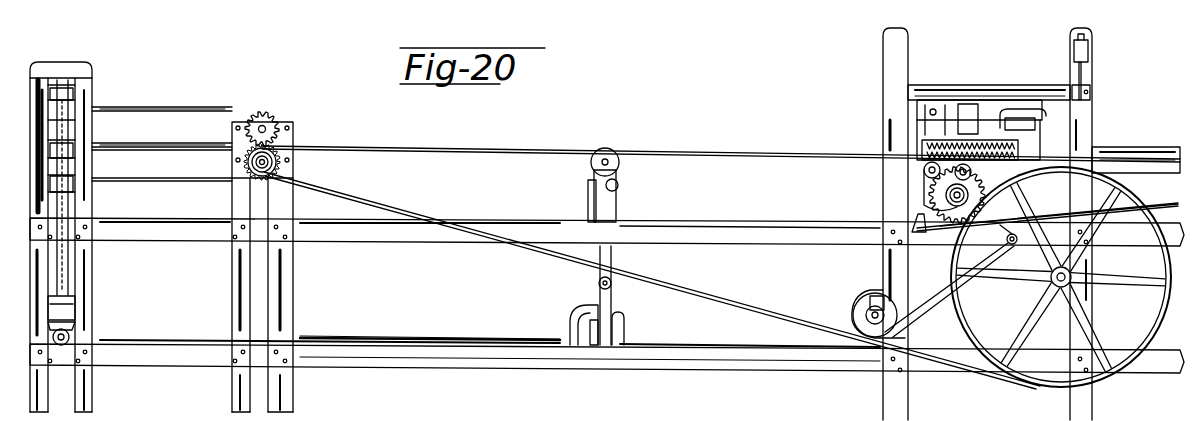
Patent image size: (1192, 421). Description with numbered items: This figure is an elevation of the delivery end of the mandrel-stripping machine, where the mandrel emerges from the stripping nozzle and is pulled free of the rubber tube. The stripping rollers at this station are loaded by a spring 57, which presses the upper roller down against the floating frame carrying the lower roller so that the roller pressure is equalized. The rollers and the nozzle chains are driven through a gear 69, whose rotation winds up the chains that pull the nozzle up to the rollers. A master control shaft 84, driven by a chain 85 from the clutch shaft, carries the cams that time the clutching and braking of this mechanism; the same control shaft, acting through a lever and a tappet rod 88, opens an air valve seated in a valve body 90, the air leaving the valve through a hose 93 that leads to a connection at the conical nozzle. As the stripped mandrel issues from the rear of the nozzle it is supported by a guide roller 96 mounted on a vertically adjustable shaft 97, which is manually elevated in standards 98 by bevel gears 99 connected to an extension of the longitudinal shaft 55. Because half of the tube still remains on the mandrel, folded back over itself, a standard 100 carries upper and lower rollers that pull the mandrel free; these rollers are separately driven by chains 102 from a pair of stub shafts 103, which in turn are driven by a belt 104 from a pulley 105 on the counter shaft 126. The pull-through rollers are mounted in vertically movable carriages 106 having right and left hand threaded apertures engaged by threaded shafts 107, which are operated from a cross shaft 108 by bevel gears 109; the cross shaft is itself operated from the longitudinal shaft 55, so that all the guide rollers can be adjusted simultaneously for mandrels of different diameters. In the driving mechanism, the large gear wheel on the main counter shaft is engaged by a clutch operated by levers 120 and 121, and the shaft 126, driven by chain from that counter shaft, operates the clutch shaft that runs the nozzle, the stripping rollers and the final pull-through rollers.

The longitudinal shaft 55 is at (500, 340).
The spring 57 is at (918, 117).
The gear 69 is at (925, 190).
The master control shaft 84 is at (858, 300).
The chain 85 is at (878, 285).
The tappet rod 88 is at (1085, 128).
The valve body 90 is at (1072, 55).
The hose 93 is at (1046, 124).
The guide roller 96 is at (619, 166).
The vertically adjustable shaft 97 is at (612, 212).
The standards 98 is at (612, 258).
The bevel gears 99 is at (622, 322).
The standard 100 is at (88, 262).
The chains 102 is at (185, 115).
The stub shafts 103 is at (278, 124).
The belt 104 is at (473, 157).
The pulley 105 is at (945, 280).
The vertically movable carriages 106 is at (70, 100).
The threaded shafts 107 is at (64, 163).
The cross shaft 108 is at (70, 333).
The bevel gears 109 is at (78, 317).
The lever 120 is at (1178, 206).
The lever 121 is at (912, 207).
The shaft 126 is at (1052, 282).